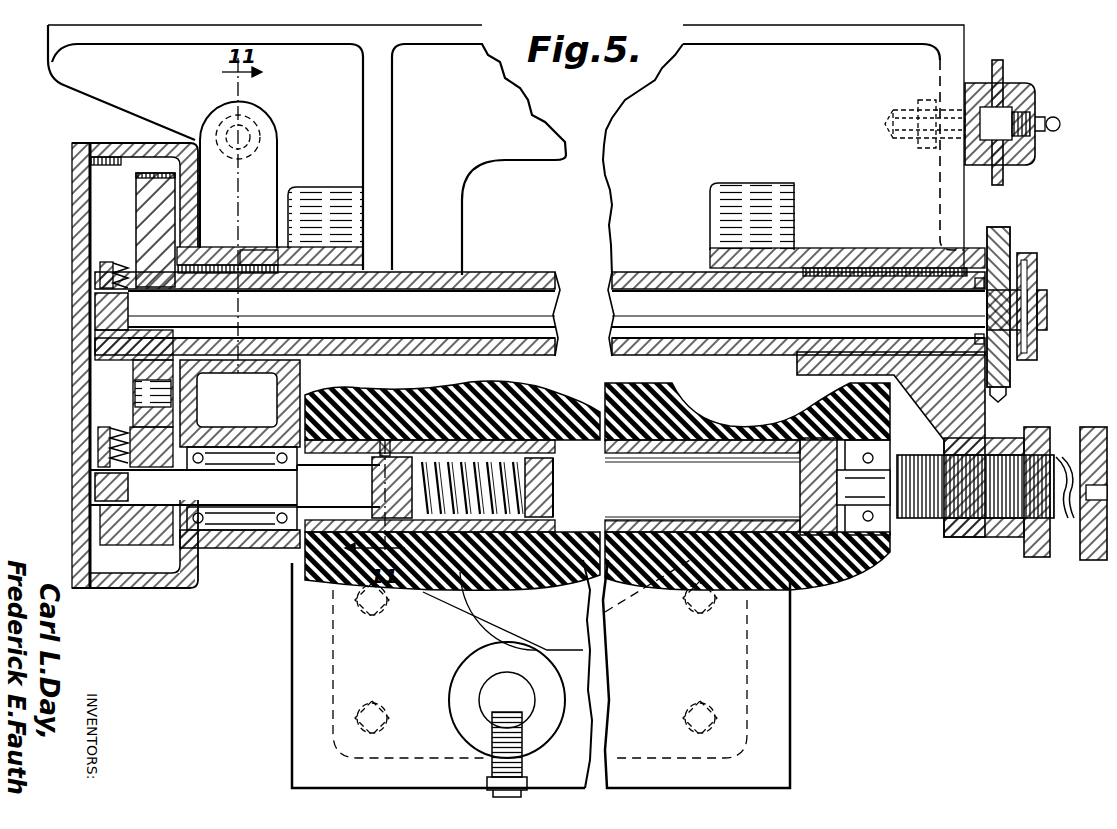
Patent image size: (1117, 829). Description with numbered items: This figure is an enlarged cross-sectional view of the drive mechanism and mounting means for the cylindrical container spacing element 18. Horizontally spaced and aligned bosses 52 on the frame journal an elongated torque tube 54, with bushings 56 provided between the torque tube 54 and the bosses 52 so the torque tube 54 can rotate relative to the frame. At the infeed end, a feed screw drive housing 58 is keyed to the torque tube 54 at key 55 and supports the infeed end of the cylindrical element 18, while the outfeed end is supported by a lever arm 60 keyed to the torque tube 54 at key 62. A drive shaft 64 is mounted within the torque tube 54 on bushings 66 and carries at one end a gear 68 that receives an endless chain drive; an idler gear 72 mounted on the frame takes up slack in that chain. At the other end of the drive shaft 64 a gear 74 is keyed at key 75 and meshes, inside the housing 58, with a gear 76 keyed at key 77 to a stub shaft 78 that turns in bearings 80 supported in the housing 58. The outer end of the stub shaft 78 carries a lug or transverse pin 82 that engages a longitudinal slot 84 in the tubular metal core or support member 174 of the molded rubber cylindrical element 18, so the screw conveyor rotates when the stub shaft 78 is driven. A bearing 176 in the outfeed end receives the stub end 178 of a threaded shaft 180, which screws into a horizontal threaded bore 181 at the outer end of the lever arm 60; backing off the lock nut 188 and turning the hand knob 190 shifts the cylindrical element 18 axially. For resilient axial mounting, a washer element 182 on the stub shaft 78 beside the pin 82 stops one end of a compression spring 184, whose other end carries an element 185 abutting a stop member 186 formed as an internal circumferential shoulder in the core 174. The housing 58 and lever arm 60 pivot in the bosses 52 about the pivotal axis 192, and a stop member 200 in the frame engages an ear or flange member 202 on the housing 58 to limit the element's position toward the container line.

The cylindrical container spacing element 18 is at (806, 563).
The bosses 52 is at (283, 205).
The torque tube 54 is at (615, 270).
The key 55 is at (247, 268).
The bushings 56 is at (393, 273).
The feed screw drive housing 58 is at (62, 280).
The lever arm 60 is at (982, 415).
The key 62 is at (965, 262).
The drive shaft 64 is at (520, 290).
The bushings 66 is at (222, 278).
The gear 68 is at (1030, 262).
The idler gear 72 is at (1003, 80).
The gear 74 is at (135, 212).
The key 75 is at (95, 275).
The gear 76 is at (102, 527).
The key 77 is at (100, 455).
The stub shaft 78 is at (255, 530).
The bearings 80 is at (208, 532).
The lug or transverse pin 82 is at (300, 548).
The slot 84 is at (385, 438).
The tubular metal core or support member 174 is at (478, 392).
The bearing 176 is at (868, 535).
The stub end 178 is at (873, 470).
The threaded shaft 180 is at (1055, 455).
The threaded bore 181 is at (990, 538).
The washer element 182 is at (405, 455).
The compression spring 184 is at (515, 410).
The element 185 is at (540, 490).
The stop member 186 is at (555, 440).
The lock nut 188 is at (1040, 558).
The hand knob 190 is at (1095, 562).
The pivotal axis 192 is at (72, 312).
The stop member 200 is at (255, 128).
The ear or flange member 202 is at (278, 128).